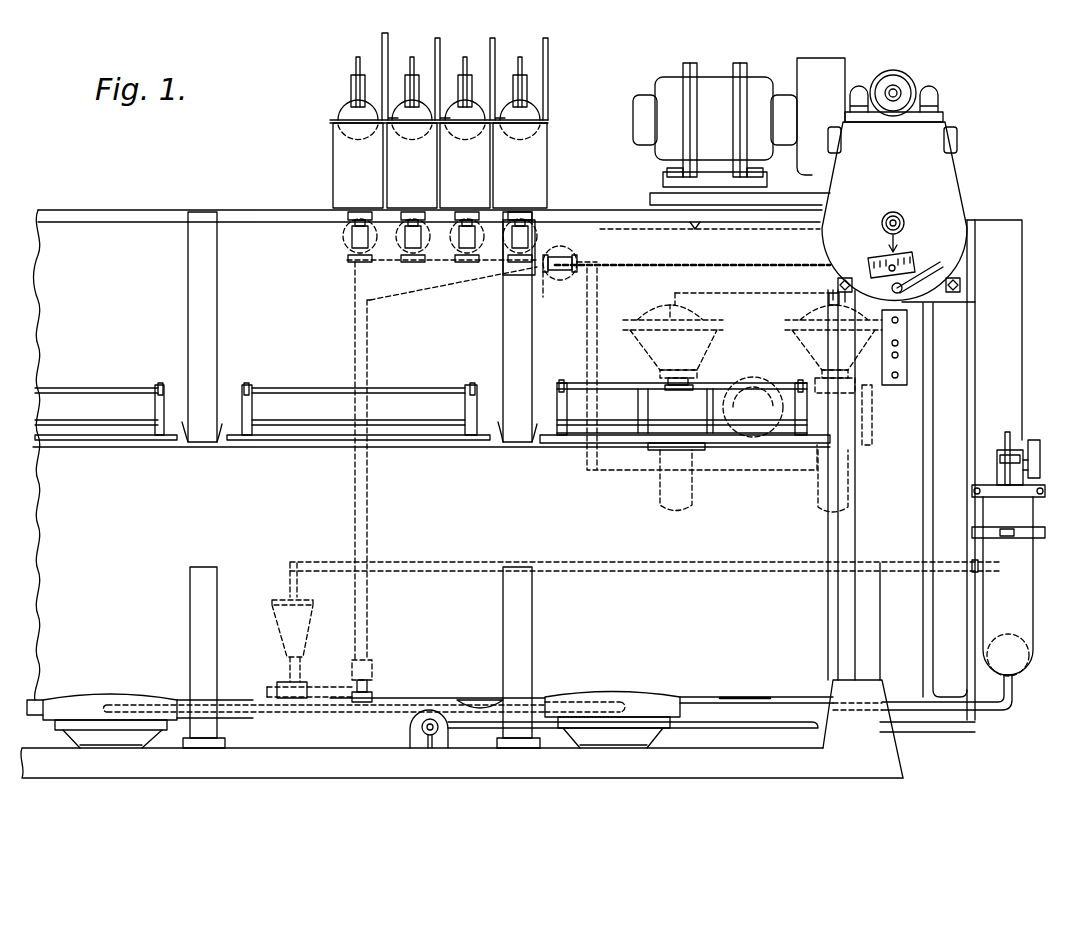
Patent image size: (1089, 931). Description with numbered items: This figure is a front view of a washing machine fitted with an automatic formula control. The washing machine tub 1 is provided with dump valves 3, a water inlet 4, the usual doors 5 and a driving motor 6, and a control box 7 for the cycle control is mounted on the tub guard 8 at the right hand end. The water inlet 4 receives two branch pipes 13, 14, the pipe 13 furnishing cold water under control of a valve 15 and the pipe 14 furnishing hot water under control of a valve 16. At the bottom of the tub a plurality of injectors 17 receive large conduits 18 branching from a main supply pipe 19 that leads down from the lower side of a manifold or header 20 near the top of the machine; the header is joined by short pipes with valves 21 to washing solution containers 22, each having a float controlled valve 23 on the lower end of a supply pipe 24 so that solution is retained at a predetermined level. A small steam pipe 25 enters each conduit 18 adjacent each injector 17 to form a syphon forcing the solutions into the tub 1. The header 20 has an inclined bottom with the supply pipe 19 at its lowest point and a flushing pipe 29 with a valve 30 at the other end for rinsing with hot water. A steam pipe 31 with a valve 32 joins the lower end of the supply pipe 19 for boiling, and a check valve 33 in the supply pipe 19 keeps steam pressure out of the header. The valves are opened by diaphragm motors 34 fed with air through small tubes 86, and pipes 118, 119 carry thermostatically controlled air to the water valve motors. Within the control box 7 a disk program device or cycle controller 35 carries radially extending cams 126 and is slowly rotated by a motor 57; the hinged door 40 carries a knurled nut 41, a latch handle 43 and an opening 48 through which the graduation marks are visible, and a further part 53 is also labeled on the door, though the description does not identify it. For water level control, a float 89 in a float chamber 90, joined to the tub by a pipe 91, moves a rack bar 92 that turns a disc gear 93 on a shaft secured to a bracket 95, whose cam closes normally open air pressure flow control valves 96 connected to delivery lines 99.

The washing machine tub 1 is at (431, 455).
The dump valves 3 is at (660, 740).
The water inlet 4 is at (753, 401).
The doors 5 is at (212, 440).
The driving motor 6 is at (718, 78).
The control box 7 is at (958, 183).
The tub guard 8 is at (968, 270).
The branch pipe 13 is at (720, 398).
The branch pipe 14 is at (800, 395).
The valve 15 is at (652, 395).
The valve 16 is at (868, 422).
The injectors 17 is at (742, 698).
The conduits 18 is at (420, 706).
The main supply pipe 19 is at (368, 703).
The manifold or header 20 is at (463, 280).
The valves 21 is at (482, 232).
The washing solution containers 22 is at (439, 154).
The float controlled valve 23 is at (351, 98).
The supply pipe 24 is at (543, 50).
The steam pipe 25 is at (580, 698).
The flushing pipe 29 is at (679, 366).
The valve 30 is at (568, 258).
The steam pipe 31 is at (311, 681).
The valve 32 is at (300, 688).
The check valve 33 is at (372, 664).
The diaphragm motor 34 is at (272, 610).
The disk program device or cycle controller 35 is at (900, 250).
The hinged door 40 is at (901, 194).
The knurled nut 41 is at (887, 215).
The latch handle 43 is at (938, 259).
The opening 48 is at (868, 260).
The shaft 53 is at (903, 220).
The motor 57 is at (897, 80).
The tube 86 is at (938, 728).
The float 89 is at (1022, 645).
The float chamber 90 is at (1015, 590).
The pipe 91 is at (885, 690).
The rack bar 92 is at (1008, 512).
The disc gear 93 is at (1005, 430).
The bracket 95 is at (997, 465).
The air pressure flow control valves 96 is at (1040, 462).
The delivery line 99 is at (1023, 370).
The pipe 118 is at (740, 294).
The pipe 119 is at (833, 300).
The radially extending cams 126 is at (978, 330).